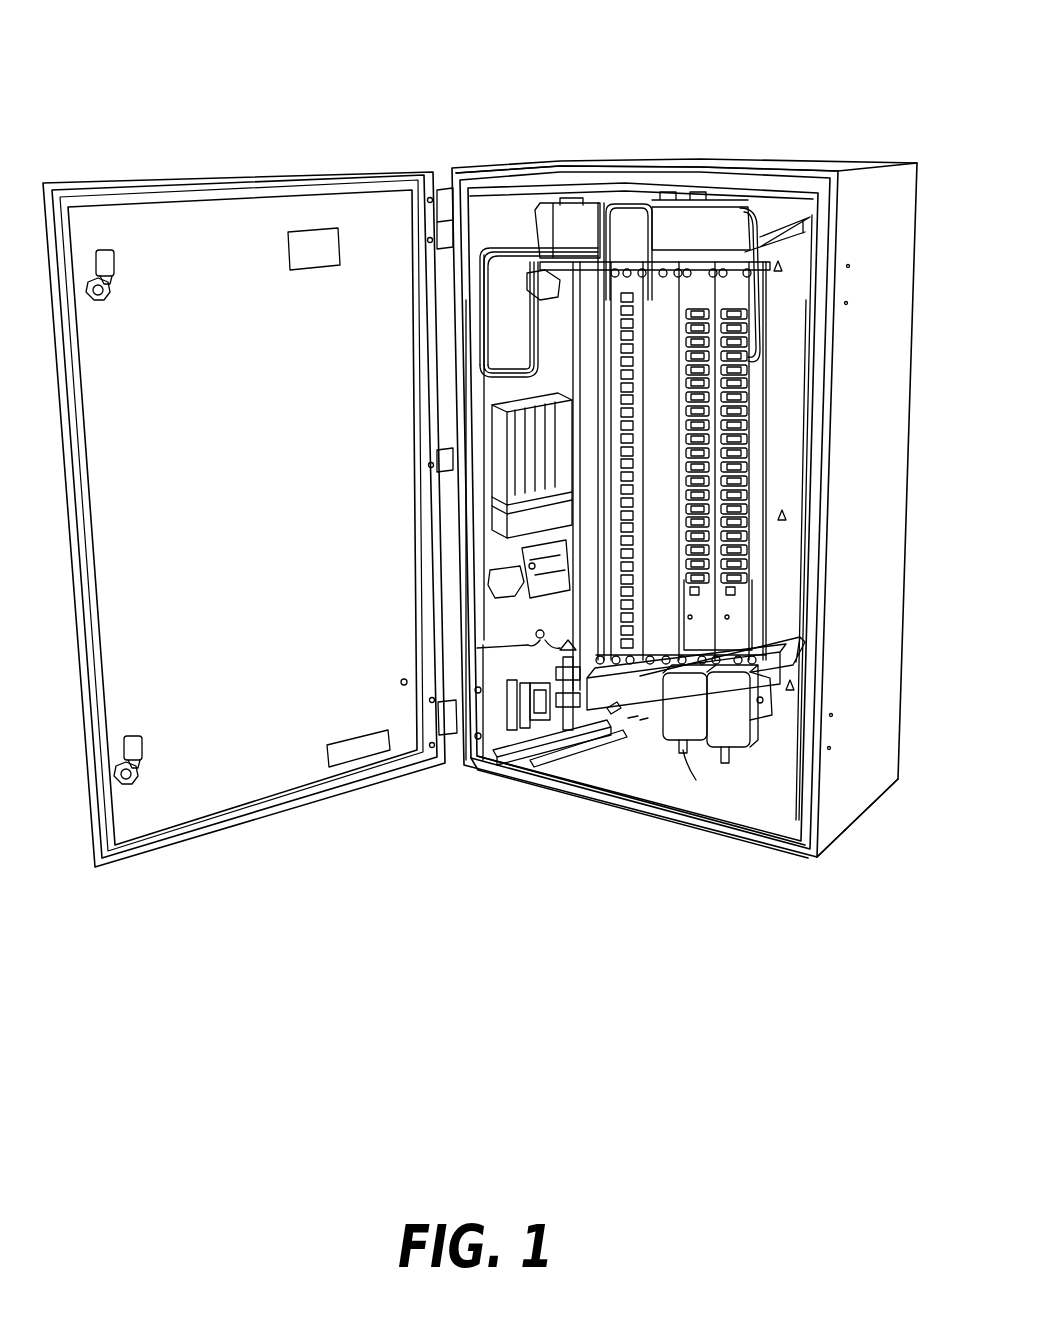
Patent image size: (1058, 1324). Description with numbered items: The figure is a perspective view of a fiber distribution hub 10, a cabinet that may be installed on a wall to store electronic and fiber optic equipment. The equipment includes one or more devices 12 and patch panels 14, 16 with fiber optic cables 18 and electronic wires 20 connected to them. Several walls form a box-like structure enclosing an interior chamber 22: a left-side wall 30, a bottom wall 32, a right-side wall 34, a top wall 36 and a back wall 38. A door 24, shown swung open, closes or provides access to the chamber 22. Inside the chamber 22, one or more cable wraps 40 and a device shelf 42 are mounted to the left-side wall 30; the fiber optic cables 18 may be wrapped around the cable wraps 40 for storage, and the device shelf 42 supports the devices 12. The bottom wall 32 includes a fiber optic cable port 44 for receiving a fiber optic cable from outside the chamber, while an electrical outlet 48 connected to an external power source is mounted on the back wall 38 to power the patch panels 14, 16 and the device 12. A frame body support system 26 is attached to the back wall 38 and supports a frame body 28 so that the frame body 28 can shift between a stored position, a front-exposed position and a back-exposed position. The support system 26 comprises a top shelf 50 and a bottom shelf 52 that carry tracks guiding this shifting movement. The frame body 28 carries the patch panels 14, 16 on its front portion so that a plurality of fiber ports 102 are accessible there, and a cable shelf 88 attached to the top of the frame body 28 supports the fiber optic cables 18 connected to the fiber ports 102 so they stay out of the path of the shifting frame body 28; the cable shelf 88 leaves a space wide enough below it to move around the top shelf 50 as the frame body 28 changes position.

The fiber distribution hub 10 is at (885, 133).
The device 12 is at (510, 482).
The patch panel 14 is at (690, 292).
The patch panel 16 is at (735, 607).
The fiber optic cable 18 is at (485, 258).
The electronic wire 20 is at (699, 778).
The interior chamber 22 is at (784, 516).
The door 24 is at (170, 176).
The frame body support system 26 is at (779, 269).
The frame body 28 is at (528, 646).
The left-side wall 30 is at (497, 685).
The bottom wall 32 is at (617, 778).
The right-side wall 34 is at (852, 443).
The top wall 36 is at (692, 160).
The back wall 38 is at (772, 443).
The cable wrap 40 is at (512, 297).
The device shelf 42 is at (546, 566).
The fiber optic cable port 44 is at (627, 730).
The electrical outlet 48 is at (760, 730).
The top shelf 50 is at (805, 232).
The bottom shelf 52 is at (793, 655).
The cable shelf 88 is at (670, 217).
The fiber port 102 is at (690, 540).